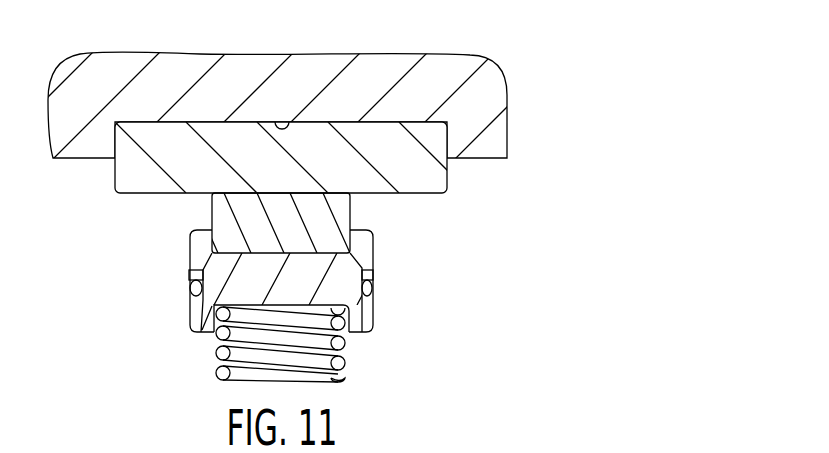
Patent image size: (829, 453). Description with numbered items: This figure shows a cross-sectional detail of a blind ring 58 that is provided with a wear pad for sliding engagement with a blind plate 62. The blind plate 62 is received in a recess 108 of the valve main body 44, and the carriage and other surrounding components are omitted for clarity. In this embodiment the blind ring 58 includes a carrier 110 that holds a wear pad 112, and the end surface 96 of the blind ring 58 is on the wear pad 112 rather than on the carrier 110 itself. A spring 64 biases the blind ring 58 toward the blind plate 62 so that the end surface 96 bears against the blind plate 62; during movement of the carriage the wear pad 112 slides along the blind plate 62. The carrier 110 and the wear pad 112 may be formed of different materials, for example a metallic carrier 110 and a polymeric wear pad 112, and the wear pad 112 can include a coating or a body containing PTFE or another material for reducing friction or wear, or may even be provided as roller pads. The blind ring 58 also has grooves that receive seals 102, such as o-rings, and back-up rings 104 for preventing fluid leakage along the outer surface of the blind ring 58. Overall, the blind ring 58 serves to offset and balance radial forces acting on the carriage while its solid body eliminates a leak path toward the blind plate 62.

The valve main body 44 is at (466, 75).
The recess 108 is at (418, 124).
The blind plate 62 is at (420, 183).
The end surface 96 is at (218, 191).
The wear pad 112 is at (218, 212).
The blind ring 58 is at (178, 253).
The back-up ring 104 is at (368, 275).
The seal 102 is at (370, 291).
The carrier 110 is at (193, 330).
The spring 64 is at (340, 364).